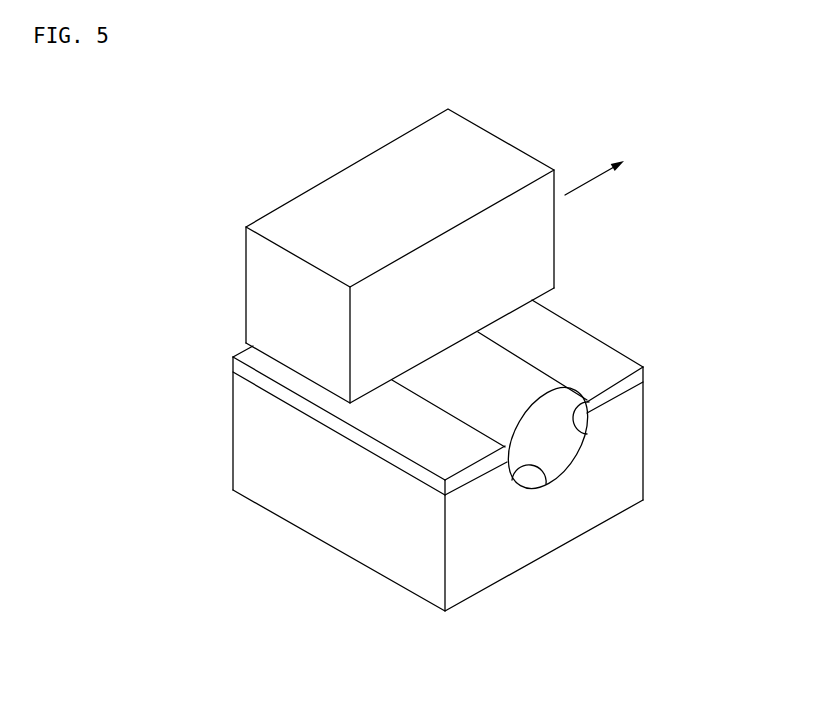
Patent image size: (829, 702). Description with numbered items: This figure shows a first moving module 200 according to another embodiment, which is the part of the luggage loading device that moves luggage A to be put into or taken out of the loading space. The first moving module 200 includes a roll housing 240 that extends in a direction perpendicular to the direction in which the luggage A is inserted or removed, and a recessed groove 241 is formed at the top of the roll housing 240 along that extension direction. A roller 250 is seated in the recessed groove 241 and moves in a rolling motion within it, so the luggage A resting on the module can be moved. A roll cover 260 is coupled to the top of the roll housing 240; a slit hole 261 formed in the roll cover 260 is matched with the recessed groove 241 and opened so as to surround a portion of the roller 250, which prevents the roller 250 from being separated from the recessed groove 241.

The luggage A is at (353, 188).
The first moving module 200 is at (446, 474).
The roll housing 240 is at (408, 542).
The recessed groove 241 is at (510, 486).
The roller 250 is at (558, 453).
The roll cover 260 is at (608, 360).
The slit hole 261 is at (587, 434).